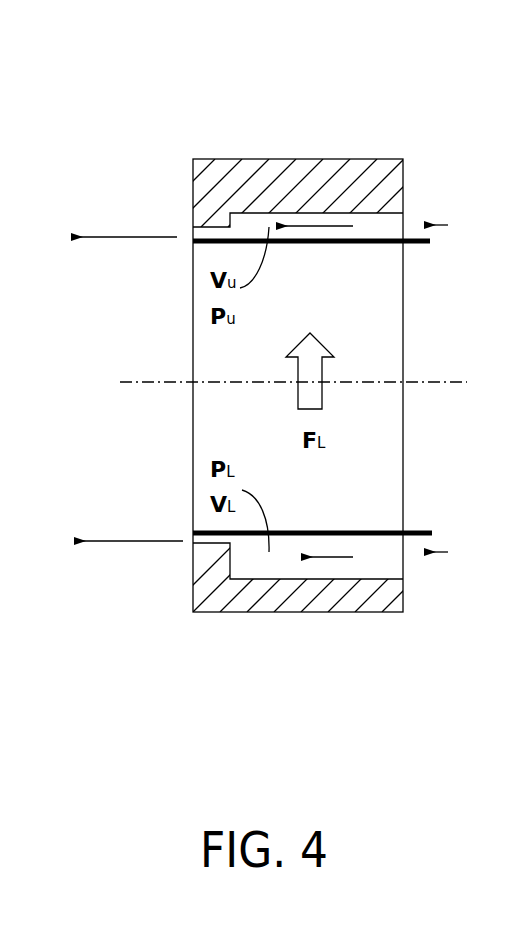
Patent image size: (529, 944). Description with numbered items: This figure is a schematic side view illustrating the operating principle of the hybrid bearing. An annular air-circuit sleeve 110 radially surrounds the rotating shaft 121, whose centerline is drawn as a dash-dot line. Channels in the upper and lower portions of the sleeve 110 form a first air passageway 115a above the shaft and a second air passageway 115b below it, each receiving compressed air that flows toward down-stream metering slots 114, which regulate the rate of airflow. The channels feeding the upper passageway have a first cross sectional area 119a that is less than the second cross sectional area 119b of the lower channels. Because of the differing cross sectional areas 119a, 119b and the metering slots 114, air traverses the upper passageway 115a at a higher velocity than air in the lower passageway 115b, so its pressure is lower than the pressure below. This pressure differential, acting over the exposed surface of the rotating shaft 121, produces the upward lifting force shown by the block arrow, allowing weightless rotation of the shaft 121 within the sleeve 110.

The air-circuit sleeve 110 is at (263, 158).
The metering slot 114 is at (207, 228).
The first air passageway 115a is at (373, 227).
The second air passageway 115b is at (372, 548).
The first cross sectional area 119a is at (407, 223).
The second cross sectional area 119b is at (407, 568).
The rotating shaft 121 is at (155, 392).